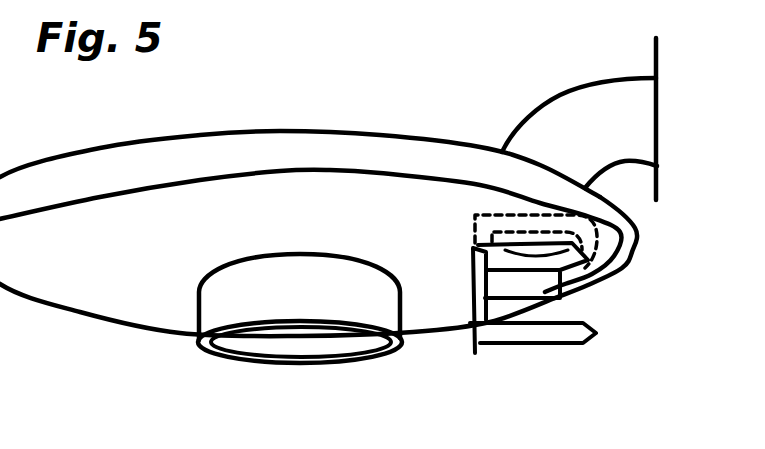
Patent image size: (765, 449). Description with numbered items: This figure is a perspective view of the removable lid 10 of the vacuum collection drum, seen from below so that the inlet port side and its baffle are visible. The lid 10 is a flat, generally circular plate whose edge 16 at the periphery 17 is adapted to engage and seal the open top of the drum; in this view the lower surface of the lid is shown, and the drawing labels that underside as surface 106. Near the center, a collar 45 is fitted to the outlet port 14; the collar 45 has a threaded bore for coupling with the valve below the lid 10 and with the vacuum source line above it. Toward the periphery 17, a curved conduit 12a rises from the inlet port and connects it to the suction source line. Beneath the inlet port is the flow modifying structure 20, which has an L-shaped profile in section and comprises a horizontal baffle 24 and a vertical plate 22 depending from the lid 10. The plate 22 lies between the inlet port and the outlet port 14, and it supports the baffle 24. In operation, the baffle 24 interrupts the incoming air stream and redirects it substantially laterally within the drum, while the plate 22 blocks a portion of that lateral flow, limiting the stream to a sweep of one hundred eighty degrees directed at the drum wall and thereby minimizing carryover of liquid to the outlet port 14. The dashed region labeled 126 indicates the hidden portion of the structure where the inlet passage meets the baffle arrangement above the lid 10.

The lid 10 is at (380, 76).
The curved conduit 12a is at (545, 102).
The edge 16 is at (58, 197).
The disc body 106 is at (145, 257).
The periphery 17 is at (660, 238).
The collar 45 is at (323, 306).
The outlet port 14 is at (203, 362).
The flow modifying structure 20 is at (473, 386).
The vertical plate 22 is at (475, 315).
The clamp block 126 is at (536, 297).
The horizontal baffle 24 is at (548, 343).